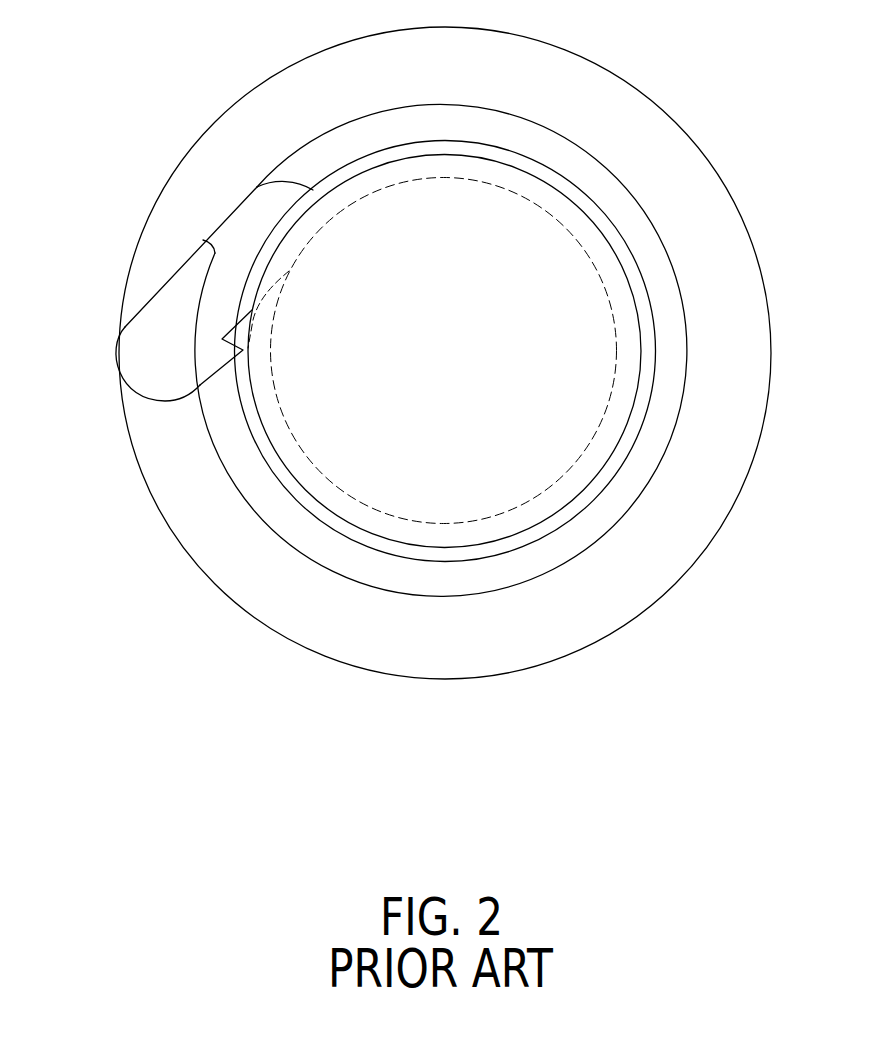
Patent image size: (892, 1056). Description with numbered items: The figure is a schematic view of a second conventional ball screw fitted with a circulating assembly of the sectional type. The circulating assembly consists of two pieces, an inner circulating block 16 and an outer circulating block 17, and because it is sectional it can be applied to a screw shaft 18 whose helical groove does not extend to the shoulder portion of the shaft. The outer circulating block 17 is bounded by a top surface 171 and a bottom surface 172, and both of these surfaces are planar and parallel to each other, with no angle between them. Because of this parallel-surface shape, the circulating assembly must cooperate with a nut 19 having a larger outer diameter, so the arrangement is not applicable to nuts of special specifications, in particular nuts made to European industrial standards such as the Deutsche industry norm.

The inner circulating block 16 is at (287, 193).
The outer circulating block 17 is at (157, 333).
The top surface 171 is at (175, 400).
The bottom surface 172 is at (168, 280).
The screw shaft 18 is at (555, 272).
The nut 19 is at (610, 82).